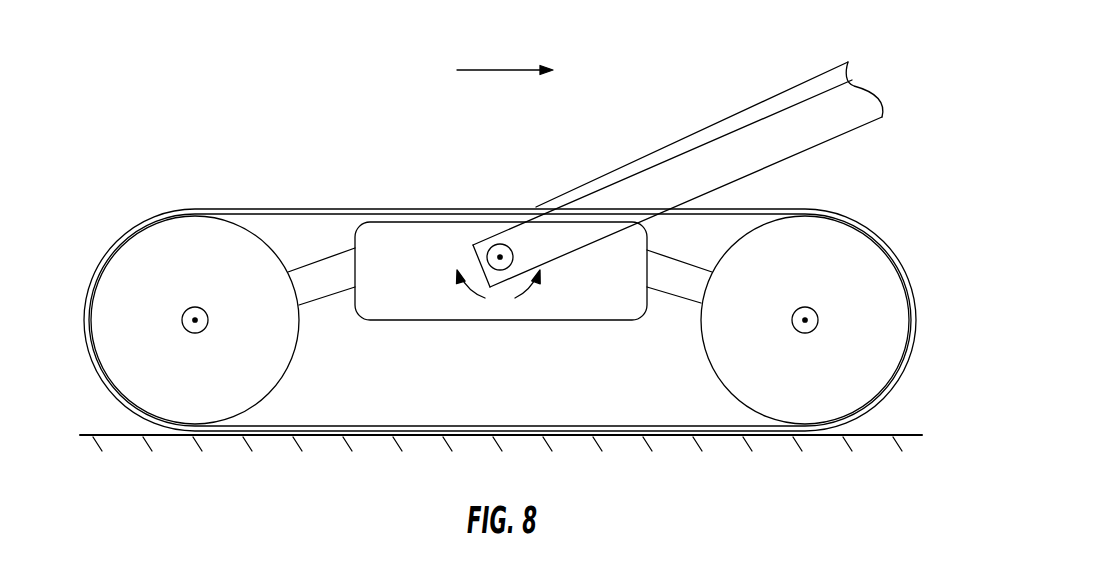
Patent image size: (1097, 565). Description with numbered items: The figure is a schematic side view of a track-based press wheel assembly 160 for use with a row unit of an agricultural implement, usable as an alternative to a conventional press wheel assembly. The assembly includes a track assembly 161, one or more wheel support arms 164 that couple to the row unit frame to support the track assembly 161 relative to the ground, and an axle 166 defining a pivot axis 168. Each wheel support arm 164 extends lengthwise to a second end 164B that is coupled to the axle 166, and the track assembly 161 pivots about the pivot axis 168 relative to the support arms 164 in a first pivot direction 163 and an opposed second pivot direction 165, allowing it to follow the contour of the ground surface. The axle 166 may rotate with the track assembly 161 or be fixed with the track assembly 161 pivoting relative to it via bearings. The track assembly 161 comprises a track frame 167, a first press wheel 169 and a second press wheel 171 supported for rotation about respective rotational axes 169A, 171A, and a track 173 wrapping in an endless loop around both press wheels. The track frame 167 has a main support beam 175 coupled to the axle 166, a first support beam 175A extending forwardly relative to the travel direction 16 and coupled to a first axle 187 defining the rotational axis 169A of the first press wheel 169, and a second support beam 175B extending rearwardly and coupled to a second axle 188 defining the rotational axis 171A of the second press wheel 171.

The travel direction 16 is at (500, 68).
The track-based press wheel assembly 160 is at (266, 117).
The track assembly 161 is at (210, 188).
The first pivot direction 163 is at (469, 288).
The wheel support arm 164 is at (657, 152).
The second end 164B is at (532, 238).
The second pivot direction 165 is at (531, 288).
The axle 166 is at (487, 250).
The track frame 167 is at (390, 348).
The pivot axis 168 is at (500, 255).
The first press wheel 169 is at (788, 282).
The rotational axis 169A is at (818, 324).
The second press wheel 171 is at (178, 282).
The rotational axis 171A is at (190, 322).
The track 173 is at (130, 237).
The main support beam 175 is at (381, 282).
The first support beam 175A is at (675, 285).
The second support beam 175B is at (326, 274).
The first axle 187 is at (805, 335).
The second axle 188 is at (198, 334).